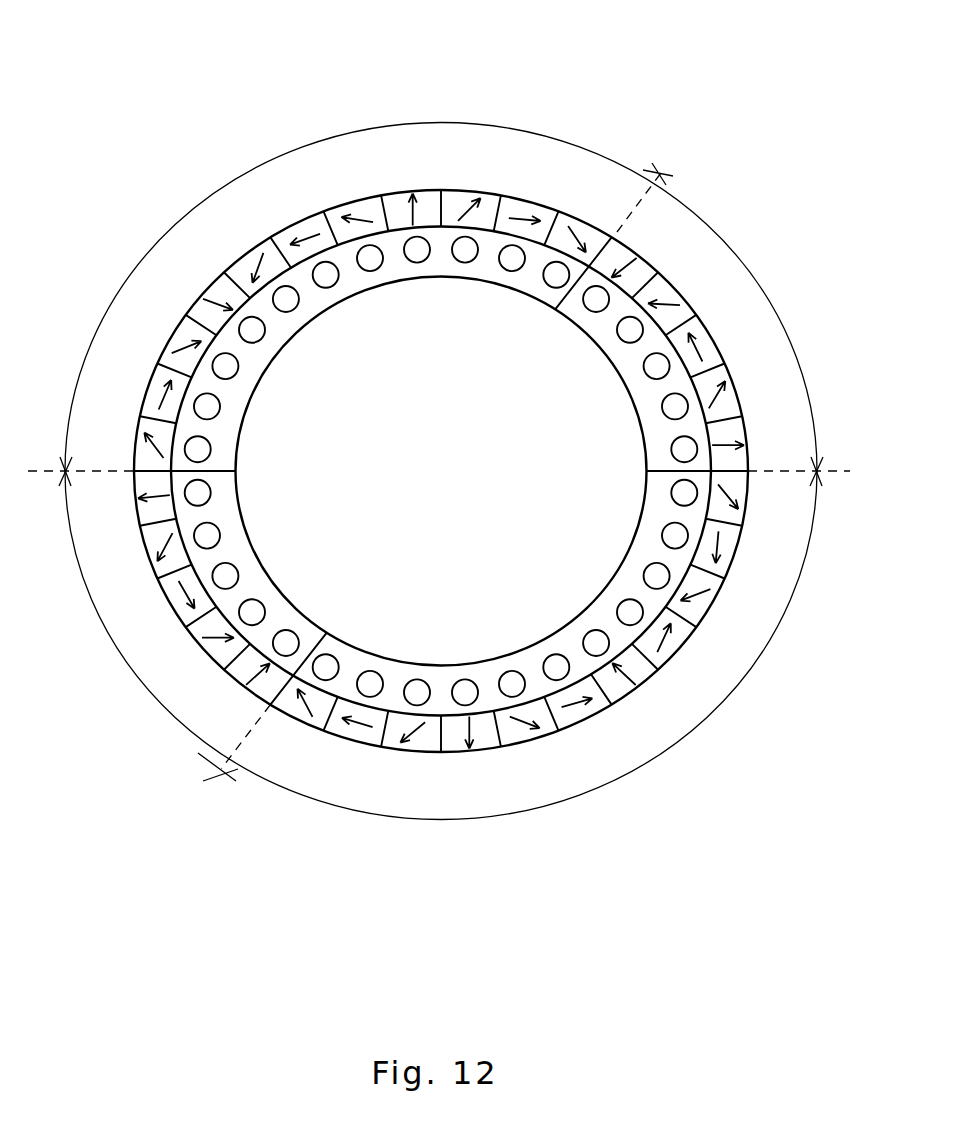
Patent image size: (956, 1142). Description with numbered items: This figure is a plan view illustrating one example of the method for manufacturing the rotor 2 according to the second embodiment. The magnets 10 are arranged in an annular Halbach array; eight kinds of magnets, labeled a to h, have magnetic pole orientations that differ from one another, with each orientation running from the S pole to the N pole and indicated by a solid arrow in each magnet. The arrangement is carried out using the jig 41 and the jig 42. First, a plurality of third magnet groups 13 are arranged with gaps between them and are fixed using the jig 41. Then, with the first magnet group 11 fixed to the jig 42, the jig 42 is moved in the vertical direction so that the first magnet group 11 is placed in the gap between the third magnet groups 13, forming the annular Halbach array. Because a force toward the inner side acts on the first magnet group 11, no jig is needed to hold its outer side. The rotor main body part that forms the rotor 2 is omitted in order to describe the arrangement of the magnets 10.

The rotor 2 is at (436, 432).
The magnets 10 is at (287, 705).
The first magnet group 11 is at (762, 277).
The third magnet group 13 is at (245, 176).
The jig 41 is at (325, 305).
The jig 42 is at (625, 368).